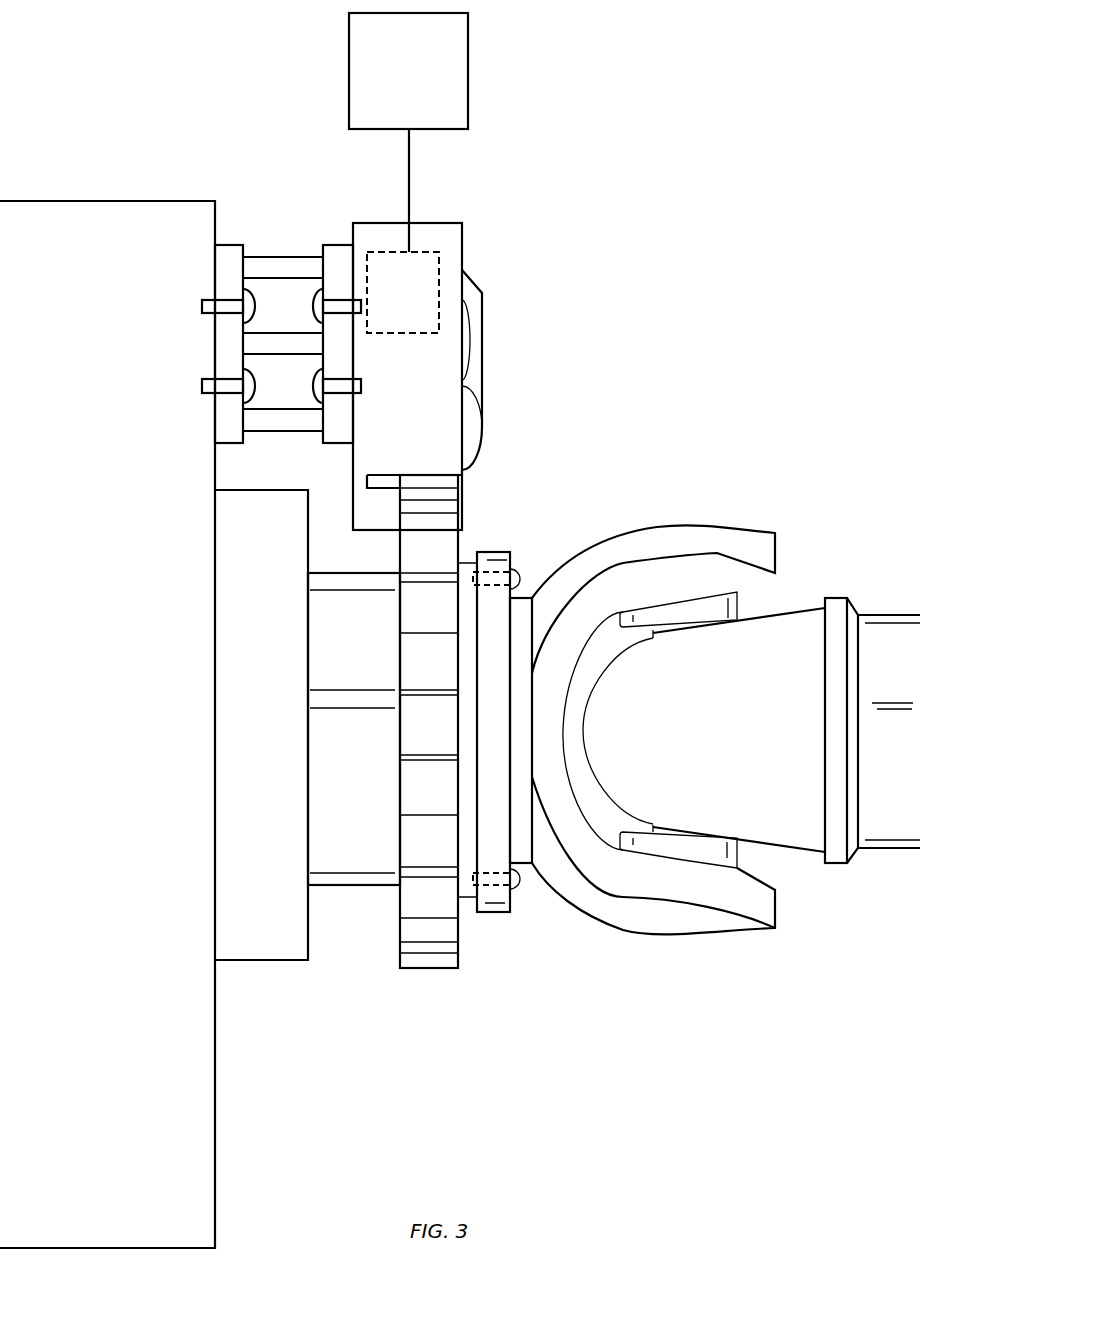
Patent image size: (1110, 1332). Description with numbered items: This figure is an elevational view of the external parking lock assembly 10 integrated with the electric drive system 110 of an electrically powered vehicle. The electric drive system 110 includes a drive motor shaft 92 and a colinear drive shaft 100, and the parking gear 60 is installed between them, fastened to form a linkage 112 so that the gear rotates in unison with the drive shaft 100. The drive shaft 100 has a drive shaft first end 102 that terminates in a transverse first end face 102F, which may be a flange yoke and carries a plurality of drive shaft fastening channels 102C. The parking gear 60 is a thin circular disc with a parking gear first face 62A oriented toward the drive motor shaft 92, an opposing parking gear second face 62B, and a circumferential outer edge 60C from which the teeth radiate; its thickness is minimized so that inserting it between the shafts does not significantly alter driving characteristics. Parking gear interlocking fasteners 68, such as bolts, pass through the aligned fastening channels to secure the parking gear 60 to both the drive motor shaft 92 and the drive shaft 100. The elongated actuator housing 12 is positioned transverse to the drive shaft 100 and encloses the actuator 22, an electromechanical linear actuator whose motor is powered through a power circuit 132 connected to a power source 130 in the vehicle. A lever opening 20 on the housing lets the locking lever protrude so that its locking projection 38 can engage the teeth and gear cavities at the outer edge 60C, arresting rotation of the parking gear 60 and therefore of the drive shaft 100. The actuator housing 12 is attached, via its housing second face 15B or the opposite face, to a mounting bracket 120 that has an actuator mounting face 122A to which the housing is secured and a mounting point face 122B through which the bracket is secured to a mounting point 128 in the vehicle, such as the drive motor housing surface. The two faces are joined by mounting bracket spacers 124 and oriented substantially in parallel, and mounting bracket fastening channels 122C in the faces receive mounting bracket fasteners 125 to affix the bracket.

The external parking lock assembly 10 is at (512, 297).
The actuator housing 12 is at (453, 223).
The housing second face 15B is at (354, 447).
The lever opening 20 is at (428, 472).
The actuator 22 is at (450, 272).
The locking projection 38 is at (447, 478).
The parking gear 60 is at (430, 970).
The outer edge 60C is at (418, 898).
The parking gear first face 62A is at (400, 953).
The parking gear second face 62B is at (463, 962).
The parking gear interlocking fasteners 68 is at (493, 573).
The drive motor shaft 92 is at (352, 815).
The drive shaft 100 is at (706, 708).
The drive shaft first end 102 is at (497, 690).
The drive shaft fastening channels 102C is at (510, 552).
The first end face 102F is at (458, 610).
The electric drive system 110 is at (689, 1010).
The linkage 112 is at (380, 552).
The mounting bracket 120 is at (285, 316).
The actuator mounting face 122A is at (337, 242).
The mounting point face 122B is at (245, 247).
The mounting bracket fastening channels 122C is at (223, 298).
The mounting bracket spacers 124 is at (264, 281).
The mounting bracket fasteners 125 is at (247, 282).
The mounting point 128 is at (218, 262).
The power source 130 is at (468, 67).
The power circuit 132 is at (409, 176).